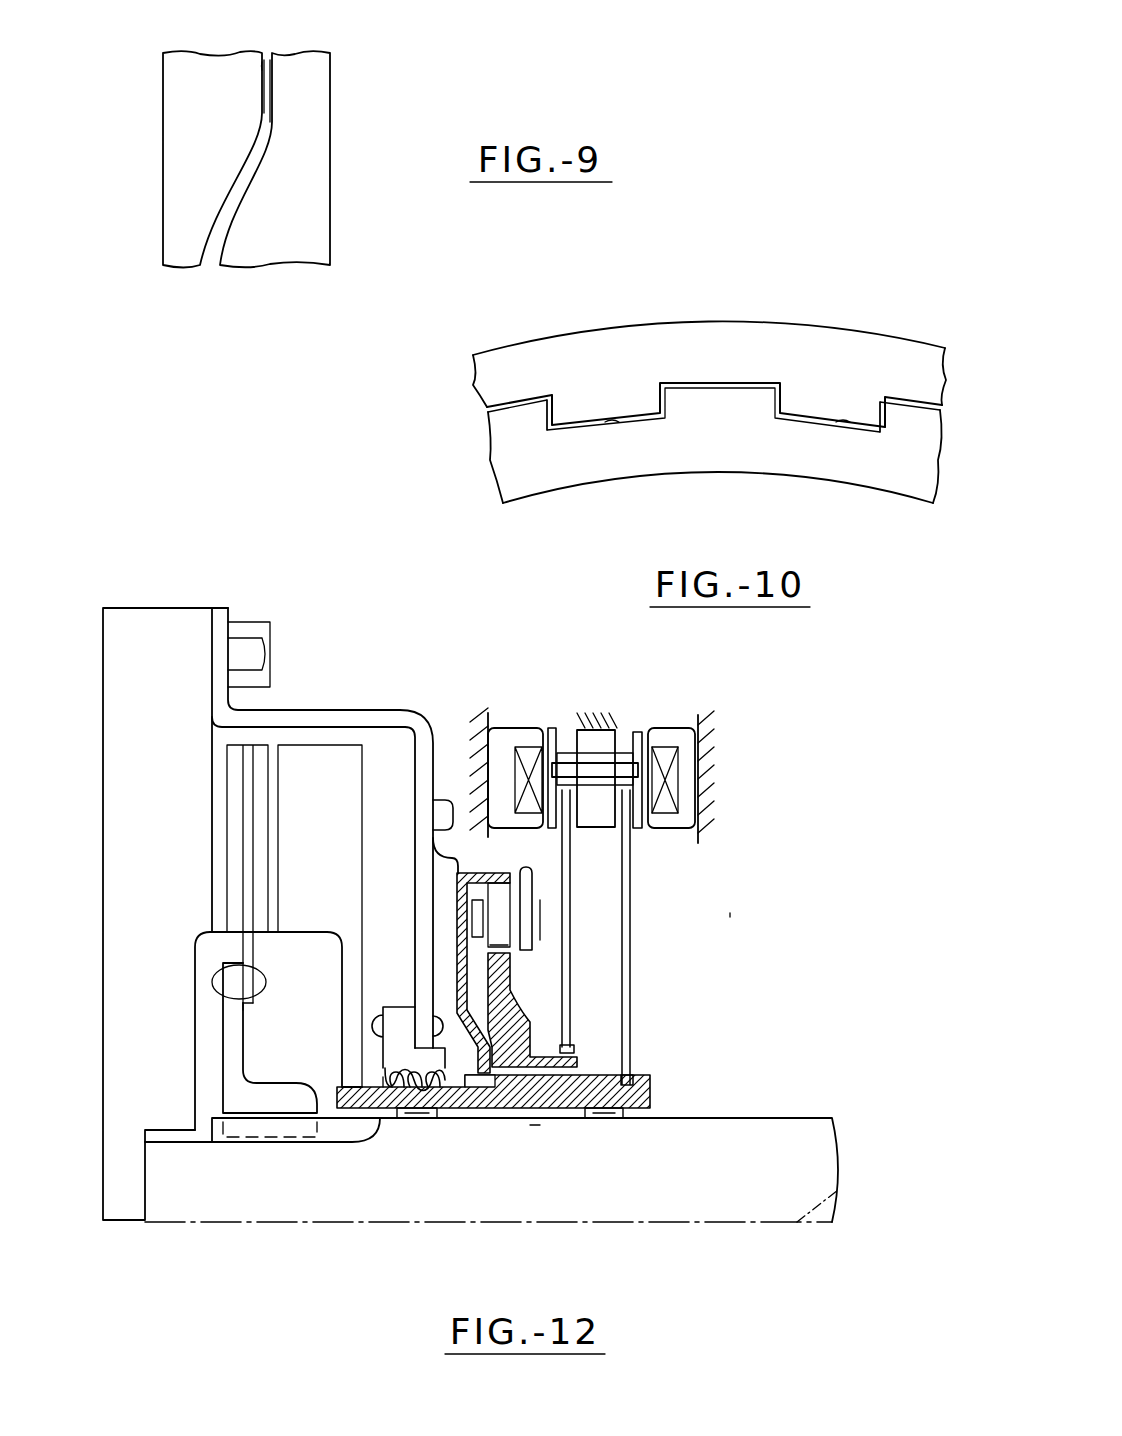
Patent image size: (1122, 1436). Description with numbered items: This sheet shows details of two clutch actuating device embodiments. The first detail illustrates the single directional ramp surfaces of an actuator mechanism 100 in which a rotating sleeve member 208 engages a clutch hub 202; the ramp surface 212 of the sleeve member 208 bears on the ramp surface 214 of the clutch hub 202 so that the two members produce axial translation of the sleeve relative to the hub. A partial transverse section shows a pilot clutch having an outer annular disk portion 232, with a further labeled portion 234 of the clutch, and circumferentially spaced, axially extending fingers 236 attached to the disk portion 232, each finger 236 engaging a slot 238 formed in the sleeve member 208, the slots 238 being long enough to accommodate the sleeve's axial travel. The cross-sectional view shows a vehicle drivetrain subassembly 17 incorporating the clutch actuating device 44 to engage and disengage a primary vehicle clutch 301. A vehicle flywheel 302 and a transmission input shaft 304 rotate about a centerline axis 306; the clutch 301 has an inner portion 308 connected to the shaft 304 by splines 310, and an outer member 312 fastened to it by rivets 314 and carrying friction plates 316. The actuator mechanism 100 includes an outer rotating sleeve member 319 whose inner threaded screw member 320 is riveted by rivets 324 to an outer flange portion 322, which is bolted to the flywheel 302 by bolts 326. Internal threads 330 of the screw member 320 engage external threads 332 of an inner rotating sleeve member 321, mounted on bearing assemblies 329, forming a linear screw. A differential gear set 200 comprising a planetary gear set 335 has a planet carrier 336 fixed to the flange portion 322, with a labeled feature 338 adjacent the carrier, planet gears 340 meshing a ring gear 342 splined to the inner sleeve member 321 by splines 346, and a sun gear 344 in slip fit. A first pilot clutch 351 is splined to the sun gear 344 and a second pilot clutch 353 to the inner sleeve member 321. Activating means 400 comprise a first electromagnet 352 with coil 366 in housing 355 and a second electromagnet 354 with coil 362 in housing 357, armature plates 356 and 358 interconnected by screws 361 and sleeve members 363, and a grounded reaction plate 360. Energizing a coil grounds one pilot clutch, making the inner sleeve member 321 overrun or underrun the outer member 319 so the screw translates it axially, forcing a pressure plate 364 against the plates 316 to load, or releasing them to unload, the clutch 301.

In FIG. 9, the clutch hub 202 is at (163, 140).
In FIG. 9, the rotating sleeve member 208 is at (330, 123).
In FIG. 9, the ramp surface 212 is at (270, 62).
In FIG. 9, the ramp surface 214 is at (262, 67).
In FIG. 10, the outer annular disk portion 232 is at (709, 384).
In FIG. 10, the upper ring segment 234 is at (603, 340).
In FIG. 10, the axially extending fingers 236 is at (623, 405).
In FIG. 10, the slot 238 is at (612, 422).
In FIG. 12, the vehicle drivetrain subassembly 17 is at (504, 845).
In FIG. 12, the actuator mechanism 100 is at (504, 866).
In FIG. 12, the vehicle flywheel 302 is at (160, 608).
In FIG. 12, the bolts 326 is at (248, 622).
In FIG. 12, the outer flange portion 322 is at (298, 710).
In FIG. 12, the outer rotating sleeve member 319 is at (383, 704).
In FIG. 12, the friction plates 316 is at (255, 848).
In FIG. 12, the outer member 312 is at (253, 952).
In FIG. 12, the pressure plate 364 is at (347, 863).
In FIG. 12, the inner portion 308 is at (230, 1050).
In FIG. 12, the rivets 314 is at (213, 982).
In FIG. 12, the primary vehicle clutch 301 is at (261, 1010).
In FIG. 12, the rivets 324 is at (373, 1027).
In FIG. 12, the inner threaded screw member 320 is at (390, 1052).
In FIG. 12, the internal threads 330 is at (400, 1076).
In FIG. 12, the tab 338 is at (452, 805).
In FIG. 12, the planet carrier 336 is at (460, 862).
In FIG. 12, the sun gear 344 is at (530, 1028).
In FIG. 12, the planet gears 340 is at (510, 955).
In FIG. 12, the planetary gear set 335 is at (537, 893).
In FIG. 12, the ring gear 342 is at (510, 880).
In FIG. 12, the differential gear set 200 is at (548, 922).
In FIG. 12, the first pilot clutch 351 is at (572, 1005).
In FIG. 12, the second pilot clutch 353 is at (632, 977).
In FIG. 12, the activating means 400 is at (633, 736).
In FIG. 12, the first electromagnet 352 is at (488, 727).
In FIG. 12, the coil 366 is at (488, 712).
In FIG. 12, the housing 355 is at (515, 750).
In FIG. 12, the armature plate 356 is at (553, 828).
In FIG. 12, the reaction plate 360 is at (600, 732).
In FIG. 12, the screws 361 is at (570, 753).
In FIG. 12, the sleeve members 363 is at (621, 753).
In FIG. 12, the armature plate 358 is at (637, 828).
In FIG. 12, the second electromagnet 354 is at (698, 713).
In FIG. 12, the housing 357 is at (700, 777).
In FIG. 12, the coil 362 is at (676, 793).
In FIG. 12, the clutch actuating device 44 is at (742, 915).
In FIG. 12, the inner rotating sleeve member 321 is at (652, 1092).
In FIG. 12, the bearing assemblies 329 is at (418, 1120).
In FIG. 12, the external threads 332 is at (396, 1092).
In FIG. 12, the transmission input shaft 304 is at (763, 1128).
In FIG. 12, the splines 346 is at (530, 1142).
In FIG. 12, the centerline axis 306 is at (838, 1195).
In FIG. 12, the splines 310 is at (260, 1140).